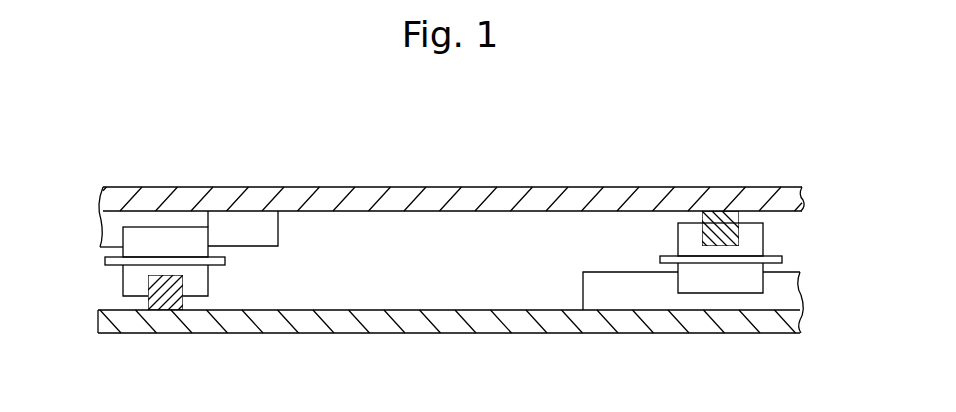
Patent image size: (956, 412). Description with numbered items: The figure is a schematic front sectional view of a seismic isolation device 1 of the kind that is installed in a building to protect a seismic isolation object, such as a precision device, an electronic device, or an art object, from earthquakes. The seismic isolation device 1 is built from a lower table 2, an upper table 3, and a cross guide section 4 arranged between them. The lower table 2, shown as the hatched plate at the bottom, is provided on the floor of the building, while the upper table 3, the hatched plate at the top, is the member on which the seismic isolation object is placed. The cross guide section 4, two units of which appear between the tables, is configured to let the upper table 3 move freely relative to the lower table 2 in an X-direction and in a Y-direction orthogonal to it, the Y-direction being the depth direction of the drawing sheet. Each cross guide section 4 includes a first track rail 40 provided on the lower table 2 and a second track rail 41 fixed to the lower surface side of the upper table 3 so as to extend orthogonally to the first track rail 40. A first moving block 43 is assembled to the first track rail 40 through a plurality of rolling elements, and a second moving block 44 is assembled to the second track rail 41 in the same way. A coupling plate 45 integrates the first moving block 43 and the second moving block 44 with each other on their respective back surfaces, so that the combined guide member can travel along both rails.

The seismic isolation device 1 is at (767, 171).
The lower table 2 is at (527, 322).
The upper table 3 is at (613, 196).
The cross guide section 4 is at (434, 258).
The first track rail 40 is at (165, 300).
The second track rail 41 is at (240, 224).
The first moving block 43 is at (197, 290).
The second moving block 44 is at (164, 236).
The coupling plate 45 is at (108, 268).